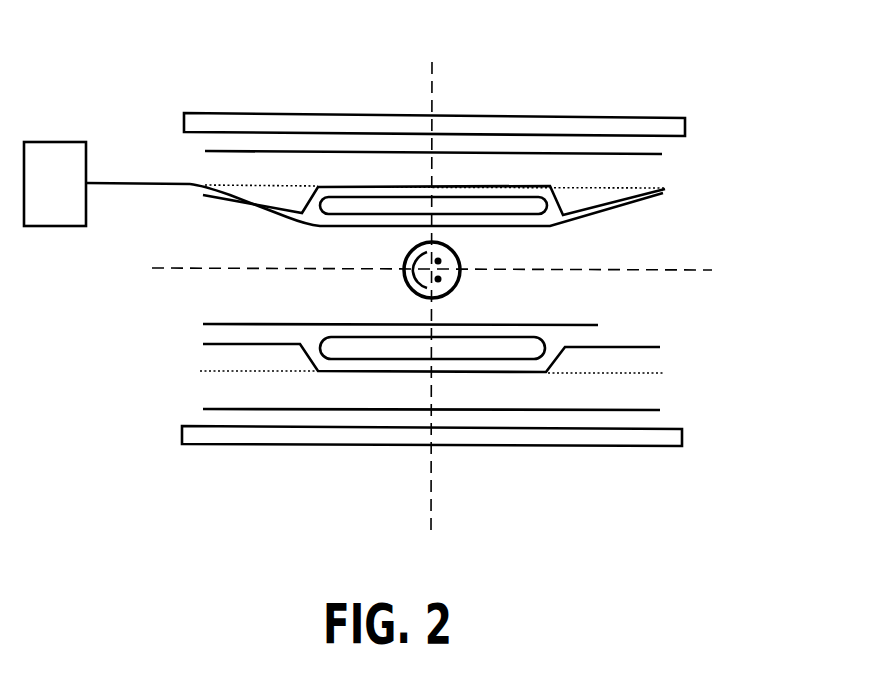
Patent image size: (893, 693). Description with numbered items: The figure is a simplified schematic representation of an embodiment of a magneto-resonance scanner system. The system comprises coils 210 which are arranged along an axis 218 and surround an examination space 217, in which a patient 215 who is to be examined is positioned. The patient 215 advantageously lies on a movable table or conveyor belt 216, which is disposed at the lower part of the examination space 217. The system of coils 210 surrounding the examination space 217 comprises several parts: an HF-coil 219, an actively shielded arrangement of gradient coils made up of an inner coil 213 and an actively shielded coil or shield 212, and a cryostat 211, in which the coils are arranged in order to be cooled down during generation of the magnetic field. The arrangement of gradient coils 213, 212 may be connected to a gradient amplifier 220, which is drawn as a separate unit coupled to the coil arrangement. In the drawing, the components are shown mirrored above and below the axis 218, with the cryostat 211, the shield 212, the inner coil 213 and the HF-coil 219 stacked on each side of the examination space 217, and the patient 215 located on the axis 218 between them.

The coils 210 is at (520, 56).
The cryostat 211 is at (668, 124).
The actively shielded coil 212 is at (662, 154).
The inner coil 213 is at (665, 191).
The patient 215 is at (401, 278).
The movable table or conveyor belt 216 is at (628, 333).
The examination space 217 is at (207, 302).
The axis 218 is at (688, 268).
The HF-coil 219 is at (507, 207).
The gradient amplifier 220 is at (56, 142).